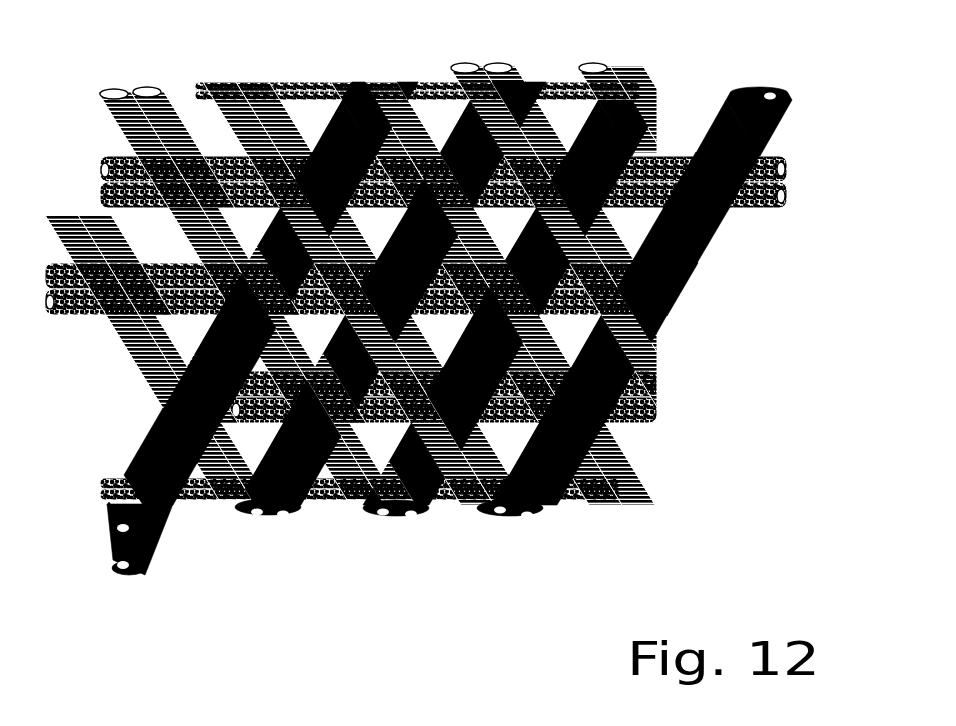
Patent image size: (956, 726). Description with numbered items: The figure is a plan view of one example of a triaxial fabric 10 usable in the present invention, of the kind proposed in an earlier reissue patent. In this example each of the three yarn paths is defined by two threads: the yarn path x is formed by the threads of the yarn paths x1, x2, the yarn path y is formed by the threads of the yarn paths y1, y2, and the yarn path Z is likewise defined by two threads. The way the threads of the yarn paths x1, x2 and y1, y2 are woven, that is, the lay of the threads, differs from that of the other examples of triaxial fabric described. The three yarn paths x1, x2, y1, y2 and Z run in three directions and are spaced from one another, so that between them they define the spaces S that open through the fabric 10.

The triaxial woven fabric 10 is at (433, 306).
The yarn path x1 is at (782, 166).
The yarn path x2 is at (773, 206).
The yarn path y1 is at (679, 419).
The yarn path y2 is at (150, 98).
The yarn path z Z is at (757, 95).
The space S is at (378, 259).